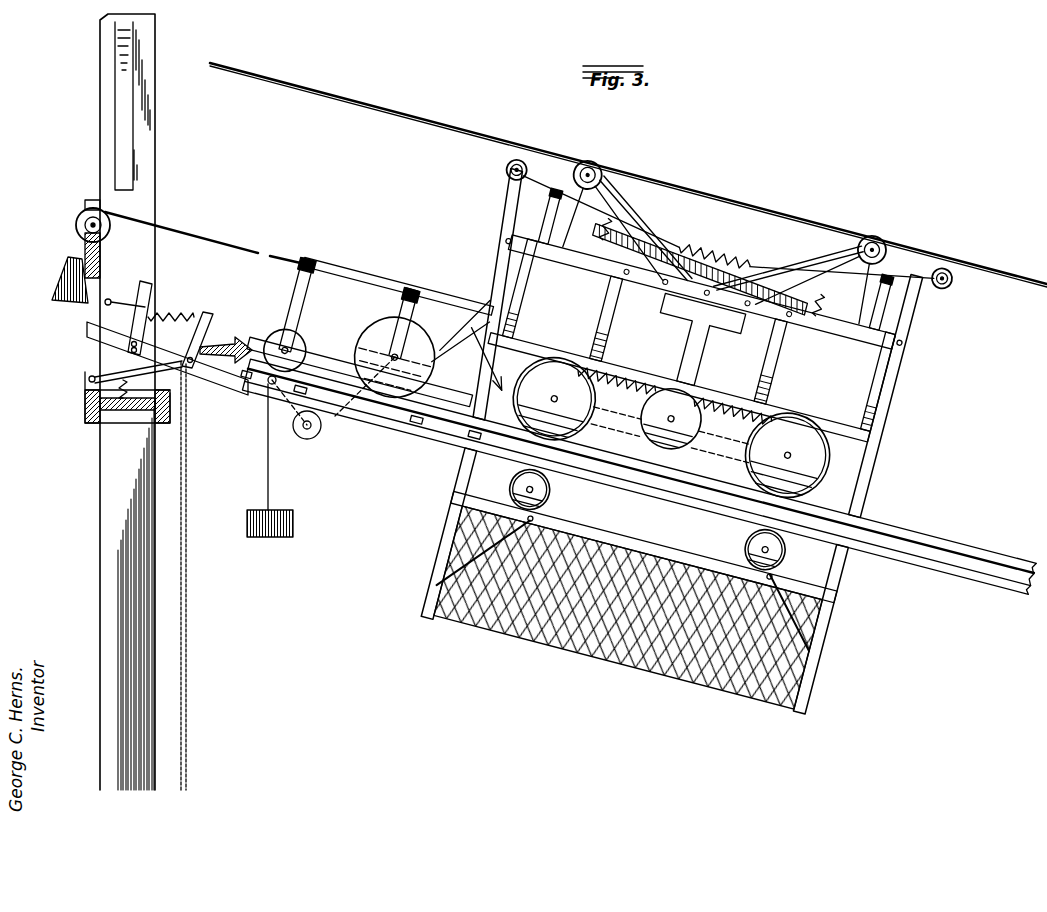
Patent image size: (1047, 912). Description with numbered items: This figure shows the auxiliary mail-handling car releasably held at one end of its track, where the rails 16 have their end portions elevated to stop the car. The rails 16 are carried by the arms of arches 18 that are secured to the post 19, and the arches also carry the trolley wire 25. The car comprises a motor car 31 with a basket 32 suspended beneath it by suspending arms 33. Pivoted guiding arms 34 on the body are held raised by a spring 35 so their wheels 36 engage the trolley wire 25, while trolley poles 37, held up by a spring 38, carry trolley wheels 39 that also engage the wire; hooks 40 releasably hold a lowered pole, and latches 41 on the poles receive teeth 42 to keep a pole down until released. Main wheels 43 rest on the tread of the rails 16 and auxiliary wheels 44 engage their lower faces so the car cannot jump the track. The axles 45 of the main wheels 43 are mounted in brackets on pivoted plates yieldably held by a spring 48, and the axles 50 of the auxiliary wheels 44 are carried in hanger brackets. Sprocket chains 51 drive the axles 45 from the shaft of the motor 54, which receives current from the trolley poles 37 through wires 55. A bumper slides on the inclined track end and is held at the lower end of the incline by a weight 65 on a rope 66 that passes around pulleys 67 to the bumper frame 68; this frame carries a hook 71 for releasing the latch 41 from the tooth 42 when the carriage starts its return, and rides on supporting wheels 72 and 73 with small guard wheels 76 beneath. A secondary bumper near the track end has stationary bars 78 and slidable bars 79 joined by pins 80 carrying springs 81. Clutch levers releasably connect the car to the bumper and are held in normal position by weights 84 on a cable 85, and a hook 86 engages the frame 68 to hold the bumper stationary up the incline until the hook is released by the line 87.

The rails 16 is at (637, 476).
The arches 18 is at (118, 95).
The post 19 is at (108, 479).
The trolley wire 25 is at (748, 205).
The motor car 31 is at (881, 395).
The basket 32 is at (631, 587).
The suspending arms 33 is at (634, 582).
The guiding arms 34 is at (722, 249).
The spring 35 is at (714, 257).
The wheels 36 is at (721, 245).
The trolley poles 37 is at (720, 258).
The spring 38 is at (712, 267).
The trolley wheels 39 is at (729, 224).
The hooks 40 is at (715, 259).
The latches 41 is at (679, 387).
The teeth 42 is at (500, 294).
The main wheels 43 is at (671, 425).
The auxiliary wheels 44 is at (647, 519).
The axles 45 is at (671, 426).
The spring 48 is at (675, 396).
The axles 50 is at (647, 519).
The sprocket chains 51 is at (669, 443).
The motor 54 is at (670, 418).
The wires 55 is at (695, 343).
The weight 65 is at (278, 510).
The rope 66 is at (266, 452).
The pulleys 67 is at (268, 384).
The frame 68 is at (463, 331).
The hook 71 is at (486, 359).
The supporting wheel 72 is at (294, 315).
The supporting wheel 73 is at (398, 342).
The guard wheels 76 is at (312, 438).
The stationary bars 78 is at (152, 288).
The slidable bars 79 is at (212, 320).
The pins 80 is at (118, 298).
The springs 81 is at (172, 312).
The weights 84 is at (68, 262).
The cable 85 is at (195, 230).
The hook 86 is at (88, 384).
The line 87 is at (188, 585).